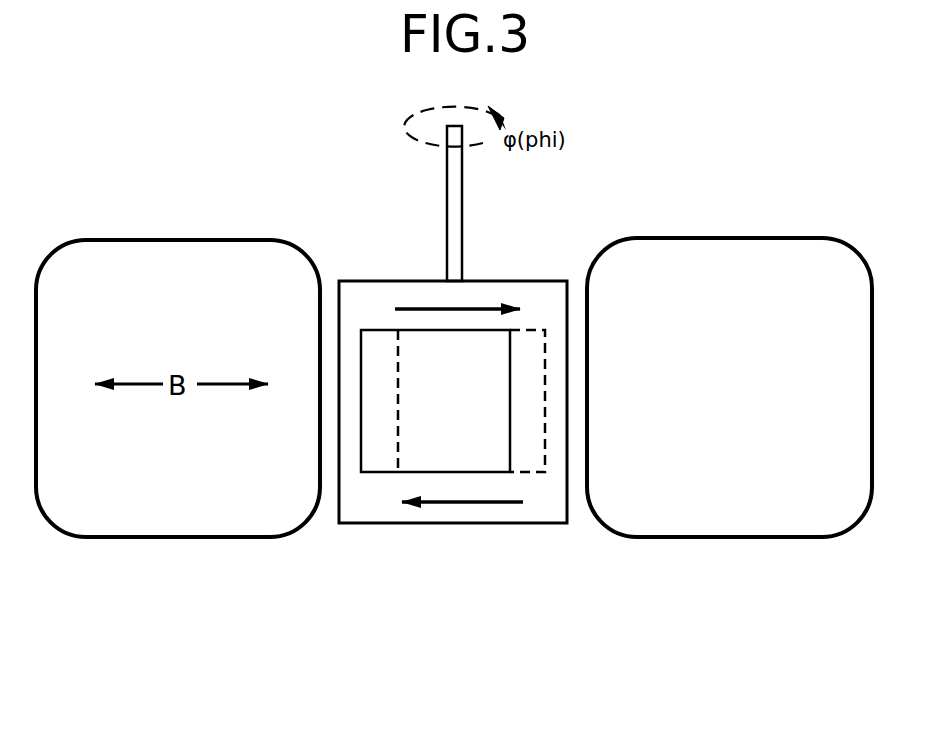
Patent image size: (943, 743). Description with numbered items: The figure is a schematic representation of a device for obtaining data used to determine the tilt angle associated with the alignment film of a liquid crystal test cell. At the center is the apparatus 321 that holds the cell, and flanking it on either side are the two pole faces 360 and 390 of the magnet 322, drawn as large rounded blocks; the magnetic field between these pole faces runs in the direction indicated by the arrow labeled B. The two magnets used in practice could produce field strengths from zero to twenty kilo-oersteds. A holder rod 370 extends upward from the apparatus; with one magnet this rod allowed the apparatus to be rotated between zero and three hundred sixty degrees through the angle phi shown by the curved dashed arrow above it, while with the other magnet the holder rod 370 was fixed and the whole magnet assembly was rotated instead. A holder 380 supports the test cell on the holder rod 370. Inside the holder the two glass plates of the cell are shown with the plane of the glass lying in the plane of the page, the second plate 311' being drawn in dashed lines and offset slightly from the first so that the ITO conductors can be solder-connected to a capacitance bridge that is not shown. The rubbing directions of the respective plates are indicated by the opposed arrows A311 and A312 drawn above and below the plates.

The pole face 360 is at (172, 240).
The magnet 322 is at (162, 568).
The pole face 390 is at (743, 238).
The holder 380 is at (488, 281).
The holder rod 370 is at (462, 210).
The glass plate 311' is at (520, 455).
The rubbing direction arrow A311 is at (435, 308).
The rubbing direction arrow A312 is at (453, 507).
The apparatus 321 is at (424, 570).